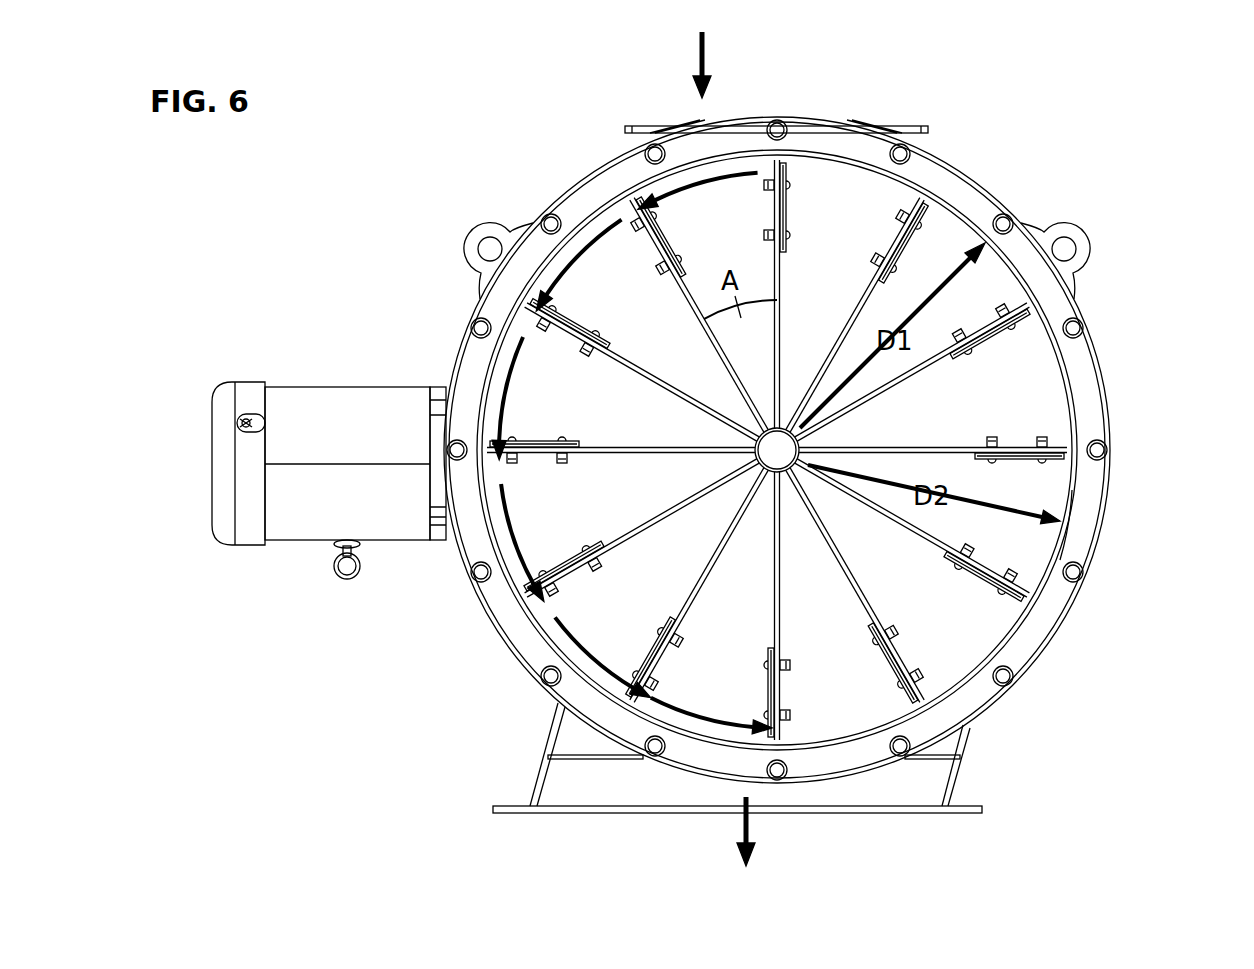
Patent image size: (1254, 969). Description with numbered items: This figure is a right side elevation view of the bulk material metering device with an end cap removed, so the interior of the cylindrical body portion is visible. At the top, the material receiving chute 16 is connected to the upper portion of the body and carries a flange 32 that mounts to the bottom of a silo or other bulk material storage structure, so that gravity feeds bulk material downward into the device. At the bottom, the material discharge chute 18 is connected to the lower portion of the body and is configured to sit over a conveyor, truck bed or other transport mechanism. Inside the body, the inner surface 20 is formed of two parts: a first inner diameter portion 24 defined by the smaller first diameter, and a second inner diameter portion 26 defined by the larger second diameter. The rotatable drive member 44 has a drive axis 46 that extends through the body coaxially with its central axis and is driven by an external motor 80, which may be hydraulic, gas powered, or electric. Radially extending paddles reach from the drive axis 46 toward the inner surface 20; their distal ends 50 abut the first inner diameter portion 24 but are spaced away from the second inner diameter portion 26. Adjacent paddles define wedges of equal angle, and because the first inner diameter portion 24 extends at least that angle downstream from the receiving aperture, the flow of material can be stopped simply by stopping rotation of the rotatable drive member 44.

The material receiving chute 16 is at (905, 118).
The material discharge chute 18 is at (952, 784).
The inner surface 20 is at (1077, 396).
The first inner diameter portion 24 is at (956, 224).
The second inner diameter portion 26 is at (1072, 498).
The flange 32 is at (633, 126).
The rotatable drive member 44 is at (626, 364).
The drive axis 46 is at (769, 424).
The distal ends 50 is at (528, 592).
The motor 80 is at (346, 447).